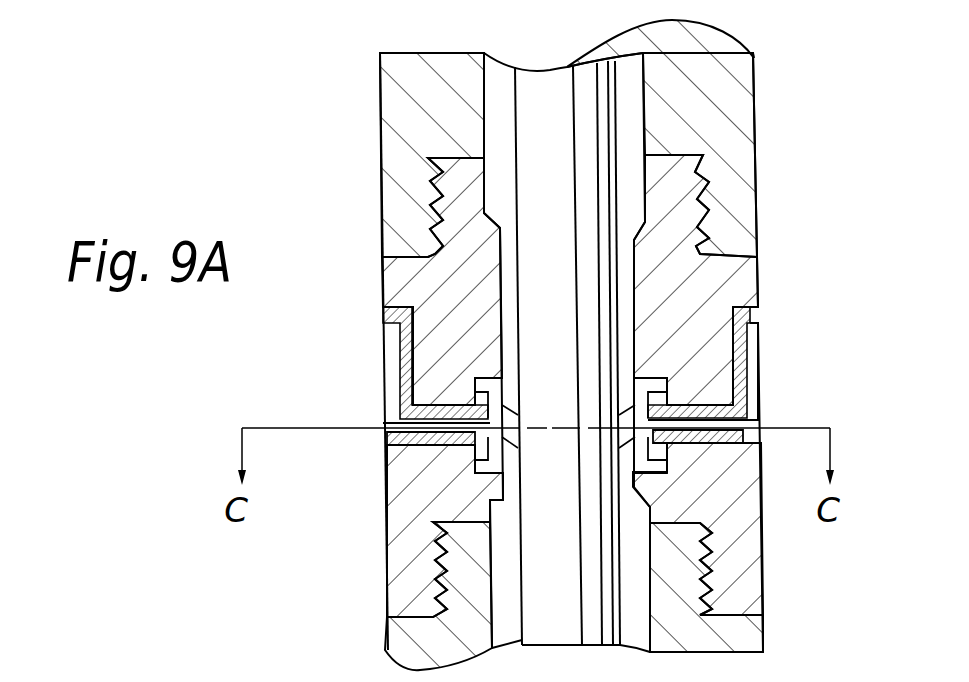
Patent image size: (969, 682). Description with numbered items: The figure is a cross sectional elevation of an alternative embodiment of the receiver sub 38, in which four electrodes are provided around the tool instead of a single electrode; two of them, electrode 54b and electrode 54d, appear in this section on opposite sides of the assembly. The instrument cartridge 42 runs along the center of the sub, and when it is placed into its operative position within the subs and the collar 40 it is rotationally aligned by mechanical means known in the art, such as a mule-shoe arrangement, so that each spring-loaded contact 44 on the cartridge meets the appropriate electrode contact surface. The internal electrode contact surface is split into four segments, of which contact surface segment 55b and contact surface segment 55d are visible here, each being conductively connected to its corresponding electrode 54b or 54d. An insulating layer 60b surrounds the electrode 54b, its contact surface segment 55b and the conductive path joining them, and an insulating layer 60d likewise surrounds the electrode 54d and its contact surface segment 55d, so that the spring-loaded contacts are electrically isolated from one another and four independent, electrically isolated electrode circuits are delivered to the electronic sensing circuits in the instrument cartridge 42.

The receiver sub 38 is at (362, 249).
The collar 40 is at (380, 70).
The instrument cartridge 42 is at (587, 297).
The spring-loaded contact 44 is at (636, 370).
The electrode 54b is at (760, 398).
The electrode 54d is at (382, 367).
The contact surface segment 55b is at (627, 445).
The contact surface segment 55d is at (504, 450).
The insulating layer 60b is at (748, 322).
The insulating layer 60d is at (384, 440).